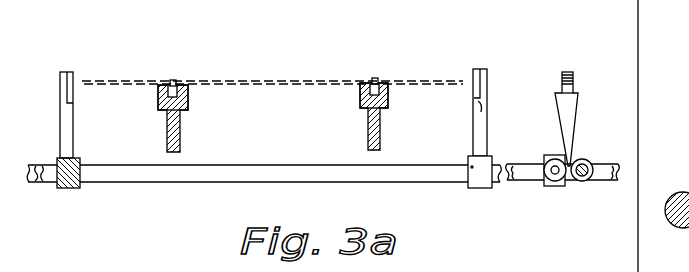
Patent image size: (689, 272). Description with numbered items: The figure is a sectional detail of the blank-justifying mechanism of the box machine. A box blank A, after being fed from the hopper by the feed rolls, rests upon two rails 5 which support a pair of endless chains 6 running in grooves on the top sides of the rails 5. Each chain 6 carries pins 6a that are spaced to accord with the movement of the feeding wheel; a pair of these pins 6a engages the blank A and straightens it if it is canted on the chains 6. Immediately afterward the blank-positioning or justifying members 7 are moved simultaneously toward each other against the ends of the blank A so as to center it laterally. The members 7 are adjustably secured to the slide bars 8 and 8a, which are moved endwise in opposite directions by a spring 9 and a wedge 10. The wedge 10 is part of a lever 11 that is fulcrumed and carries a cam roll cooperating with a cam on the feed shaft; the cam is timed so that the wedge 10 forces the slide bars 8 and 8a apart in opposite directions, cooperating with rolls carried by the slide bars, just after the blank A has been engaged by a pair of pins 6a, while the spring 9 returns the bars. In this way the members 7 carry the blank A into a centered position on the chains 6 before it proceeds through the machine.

The rail 5 is at (181, 125).
The endless chain 6 is at (189, 98).
The pin 6a is at (175, 80).
The blank-positioning member 7 is at (71, 72).
The slide bar 8 is at (163, 178).
The slide bar 8a is at (102, 178).
The spring 9 is at (585, 182).
The wedge 10 is at (574, 130).
The lever 11 is at (564, 75).
The box blank A is at (280, 81).